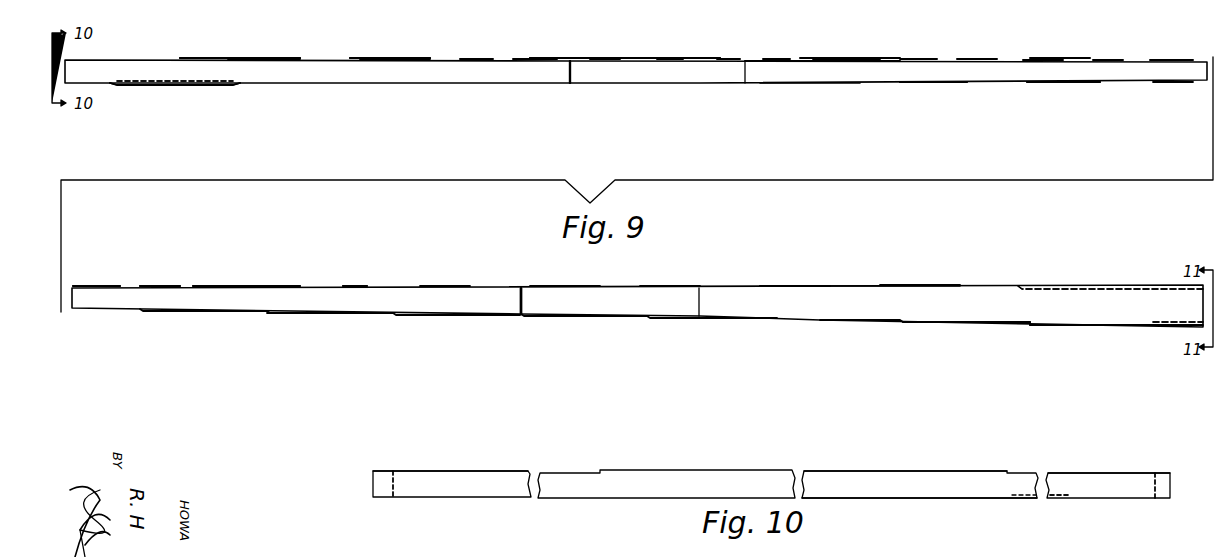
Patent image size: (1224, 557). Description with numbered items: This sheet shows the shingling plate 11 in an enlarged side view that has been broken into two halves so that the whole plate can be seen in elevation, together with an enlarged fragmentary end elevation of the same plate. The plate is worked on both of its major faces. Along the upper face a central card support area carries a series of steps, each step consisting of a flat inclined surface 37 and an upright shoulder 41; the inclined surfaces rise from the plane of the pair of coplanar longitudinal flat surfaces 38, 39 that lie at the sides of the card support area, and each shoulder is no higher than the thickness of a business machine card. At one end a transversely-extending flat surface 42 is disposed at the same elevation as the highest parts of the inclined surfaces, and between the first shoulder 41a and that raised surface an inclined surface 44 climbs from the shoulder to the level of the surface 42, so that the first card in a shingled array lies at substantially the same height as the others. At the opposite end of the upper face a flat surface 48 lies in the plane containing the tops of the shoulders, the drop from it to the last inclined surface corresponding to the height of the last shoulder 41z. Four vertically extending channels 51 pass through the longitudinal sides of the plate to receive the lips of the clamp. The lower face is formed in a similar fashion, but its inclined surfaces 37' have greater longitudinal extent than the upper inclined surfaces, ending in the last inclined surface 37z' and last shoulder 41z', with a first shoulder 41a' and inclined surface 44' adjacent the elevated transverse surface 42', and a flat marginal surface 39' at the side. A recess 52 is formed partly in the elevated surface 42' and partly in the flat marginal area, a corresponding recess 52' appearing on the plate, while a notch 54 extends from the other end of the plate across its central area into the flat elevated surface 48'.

In FIG. 9, the shingling plate 11 is at (474, 56).
In FIG. 10, the shingling plate 11 is at (989, 468).
In FIG. 9, the inclined surface 37 is at (285, 156).
In FIG. 9, the inclined surface 37' is at (683, 215).
In FIG. 9, the last inclined surface 37z' is at (899, 341).
In FIG. 9, the flat surface 38 is at (105, 58).
In FIG. 10, the flat surface 38 is at (1082, 473).
In FIG. 10, the flat surface 39 is at (450, 456).
In FIG. 9, the flat surface 39' is at (980, 341).
In FIG. 9, the shoulder 41 is at (873, 60).
In FIG. 9, the first shoulder 41a is at (379, 272).
In FIG. 9, the first shoulder 41a' is at (925, 101).
In FIG. 9, the last shoulder 41z is at (449, 41).
In FIG. 9, the last shoulder 41z' is at (1053, 342).
In FIG. 9, the transversely-extending flat surface 42 is at (1110, 275).
In FIG. 9, the elevated transversely extending surface 42' is at (170, 100).
In FIG. 10, the elevated transversely extending surface 42' is at (919, 513).
In FIG. 9, the inclined surface 44 is at (860, 274).
In FIG. 9, the inclined surface 44' is at (810, 98).
In FIG. 9, the flat surface 48 is at (281, 42).
In FIG. 10, the flat surface 48 is at (905, 457).
In FIG. 9, the flat elevated surface 48' is at (1123, 343).
In FIG. 9, the channel 51 is at (677, 74).
In FIG. 10, the channel 51 is at (383, 478).
In FIG. 10, the recess 52 is at (1068, 512).
In FIG. 9, the recess 52' is at (175, 98).
In FIG. 9, the notch 54 is at (1160, 324).